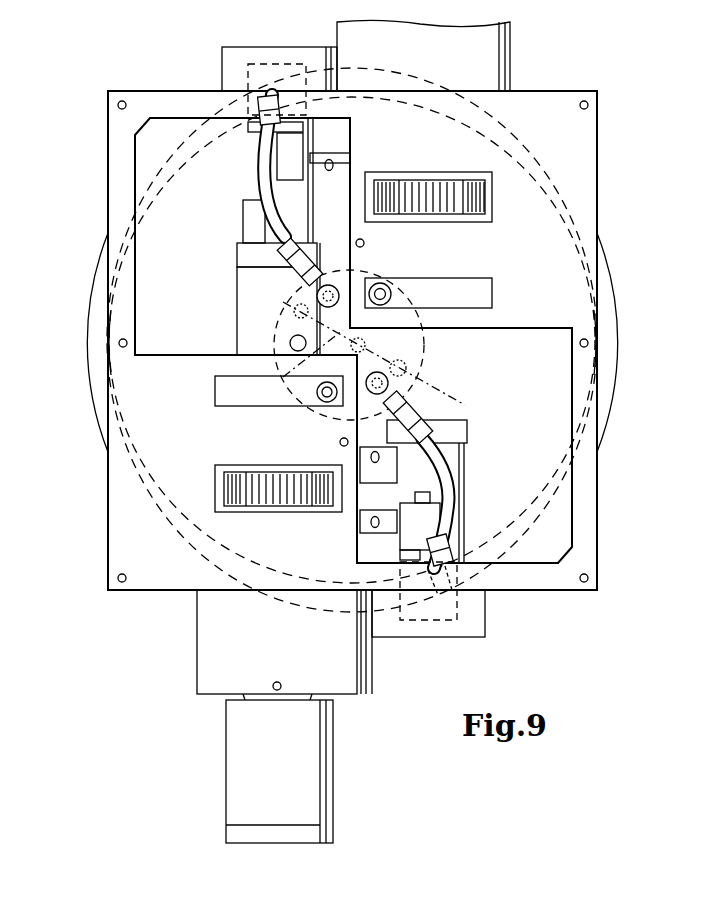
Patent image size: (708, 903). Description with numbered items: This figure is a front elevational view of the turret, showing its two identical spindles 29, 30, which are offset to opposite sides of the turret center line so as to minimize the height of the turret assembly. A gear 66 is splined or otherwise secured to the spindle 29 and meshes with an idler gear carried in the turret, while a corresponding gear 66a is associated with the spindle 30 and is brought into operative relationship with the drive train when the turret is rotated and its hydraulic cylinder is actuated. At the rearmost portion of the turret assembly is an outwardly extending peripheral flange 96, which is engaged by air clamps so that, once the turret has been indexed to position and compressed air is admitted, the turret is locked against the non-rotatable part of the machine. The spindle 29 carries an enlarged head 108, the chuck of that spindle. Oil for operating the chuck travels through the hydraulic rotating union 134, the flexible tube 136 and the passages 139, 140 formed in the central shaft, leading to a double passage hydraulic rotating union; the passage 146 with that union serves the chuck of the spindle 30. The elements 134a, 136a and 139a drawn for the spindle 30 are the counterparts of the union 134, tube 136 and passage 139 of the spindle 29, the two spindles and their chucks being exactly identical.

The spindle 29 is at (190, 636).
The spindle 30 is at (514, 53).
The gear 66 is at (233, 485).
The gear 66a is at (457, 204).
The peripheral flange 96 is at (95, 345).
The enlarged head 108 is at (310, 788).
The hydraulic rotating union 134 is at (262, 90).
The hose connection 134a is at (457, 597).
The flexible tube 136 is at (258, 218).
The flexible hose 136a is at (453, 497).
The passage 139 is at (350, 338).
The nozzle position 139a is at (404, 386).
The passage 140 is at (280, 379).
The passage 146 is at (320, 347).